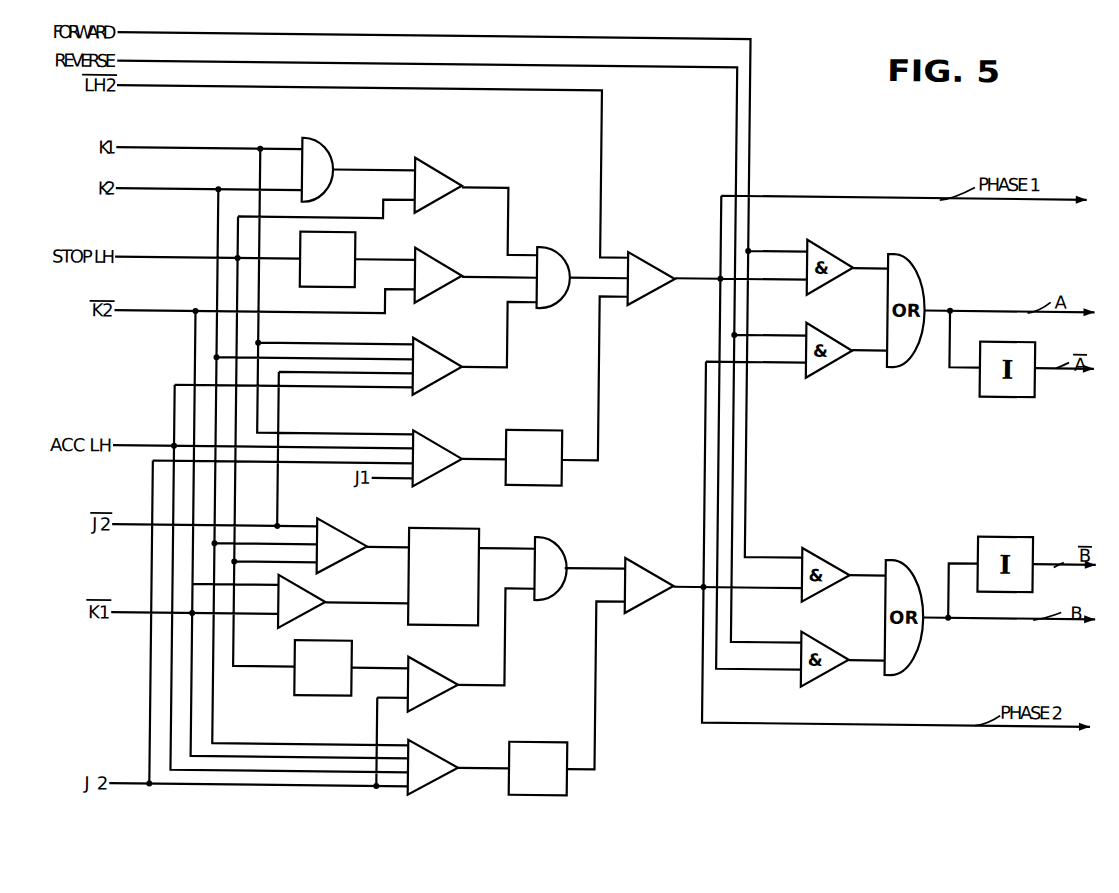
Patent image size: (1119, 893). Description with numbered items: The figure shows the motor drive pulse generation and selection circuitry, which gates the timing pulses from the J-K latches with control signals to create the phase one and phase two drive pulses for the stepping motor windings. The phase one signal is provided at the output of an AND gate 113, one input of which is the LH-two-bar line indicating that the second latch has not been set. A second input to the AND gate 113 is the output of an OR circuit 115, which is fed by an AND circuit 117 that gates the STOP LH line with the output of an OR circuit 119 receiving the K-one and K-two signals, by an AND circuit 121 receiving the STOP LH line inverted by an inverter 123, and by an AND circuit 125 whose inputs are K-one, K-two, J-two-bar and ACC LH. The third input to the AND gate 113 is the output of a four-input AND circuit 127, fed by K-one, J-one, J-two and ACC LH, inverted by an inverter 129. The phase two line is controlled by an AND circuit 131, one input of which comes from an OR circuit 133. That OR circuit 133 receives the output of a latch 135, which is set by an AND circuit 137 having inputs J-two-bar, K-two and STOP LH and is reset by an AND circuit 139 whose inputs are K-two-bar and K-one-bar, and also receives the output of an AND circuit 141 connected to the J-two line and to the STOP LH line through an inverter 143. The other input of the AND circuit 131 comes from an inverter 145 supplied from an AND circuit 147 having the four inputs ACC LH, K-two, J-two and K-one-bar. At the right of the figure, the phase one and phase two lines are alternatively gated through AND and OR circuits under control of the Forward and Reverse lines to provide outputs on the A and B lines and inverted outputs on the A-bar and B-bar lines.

The AND gate 113 is at (643, 257).
The OR circuit 115 is at (548, 248).
The AND circuit 117 is at (432, 164).
The OR circuit 119 is at (329, 156).
The AND circuit 121 is at (433, 254).
The inverter 123 is at (353, 244).
The AND circuit 125 is at (431, 353).
The AND circuit 127 is at (430, 441).
The inverter 129 is at (530, 430).
The AND circuit 131 is at (649, 564).
The OR circuit 133 is at (554, 540).
The latch LH3 135 is at (474, 531).
The AND circuit 137 is at (341, 532).
The AND circuit 139 is at (314, 600).
The AND circuit 141 is at (435, 666).
The inverter 143 is at (352, 643).
The inverter 145 is at (538, 742).
The AND circuit 147 is at (436, 749).